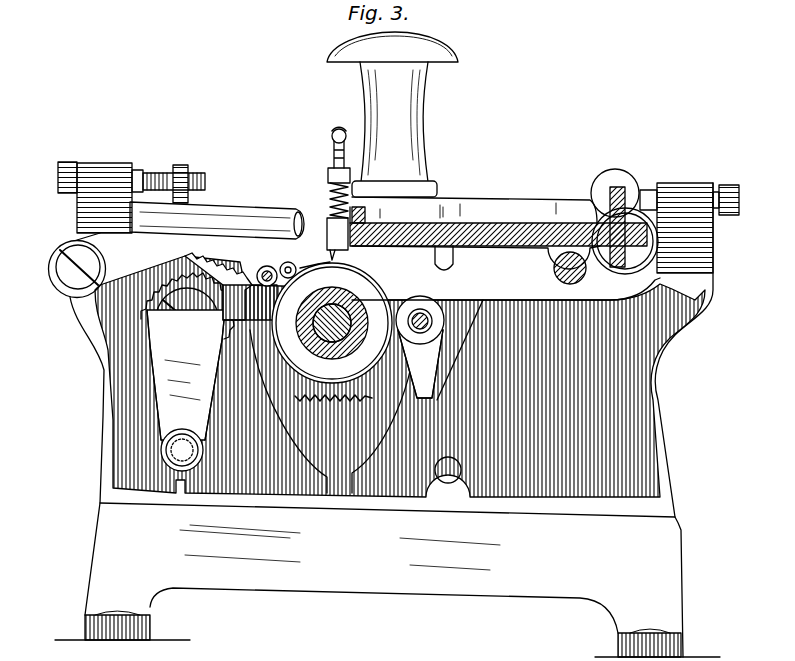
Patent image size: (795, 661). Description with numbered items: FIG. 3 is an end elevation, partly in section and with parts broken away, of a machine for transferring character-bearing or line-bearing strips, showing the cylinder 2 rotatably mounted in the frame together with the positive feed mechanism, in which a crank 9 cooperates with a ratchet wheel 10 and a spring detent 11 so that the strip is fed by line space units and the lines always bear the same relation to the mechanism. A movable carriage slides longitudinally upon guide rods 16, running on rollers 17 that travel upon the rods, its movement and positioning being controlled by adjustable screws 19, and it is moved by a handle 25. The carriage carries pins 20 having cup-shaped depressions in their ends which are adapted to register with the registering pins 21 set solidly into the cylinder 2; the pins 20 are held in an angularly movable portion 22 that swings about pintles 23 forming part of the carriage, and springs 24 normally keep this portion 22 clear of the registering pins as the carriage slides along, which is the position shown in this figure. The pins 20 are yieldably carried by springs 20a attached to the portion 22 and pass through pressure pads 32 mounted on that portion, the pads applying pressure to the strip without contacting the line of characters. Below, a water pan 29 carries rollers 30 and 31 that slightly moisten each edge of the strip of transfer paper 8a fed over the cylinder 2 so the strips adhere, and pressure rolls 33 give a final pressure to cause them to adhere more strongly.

The cylinder 2 is at (357, 300).
The transfer paper 8a is at (352, 493).
The crank 9 is at (175, 387).
The ratchet wheel 10 is at (103, 337).
The spring detent 11 is at (117, 252).
The guide rods 16 is at (217, 207).
The rollers 17 is at (616, 170).
The adjustable screws 19 is at (160, 172).
The pins 20 is at (328, 170).
The springs 20a is at (335, 160).
The registering pins 21 is at (358, 276).
The angularly movable portion 22 is at (497, 203).
The pintles 23 is at (553, 275).
The springs 24 is at (327, 197).
The handle 25 is at (445, 55).
The water pan 29 is at (253, 283).
The rollers 30 is at (262, 270).
The rollers 31 is at (286, 268).
The pressure pads 32 is at (330, 267).
The pressure rolls 33 is at (432, 300).